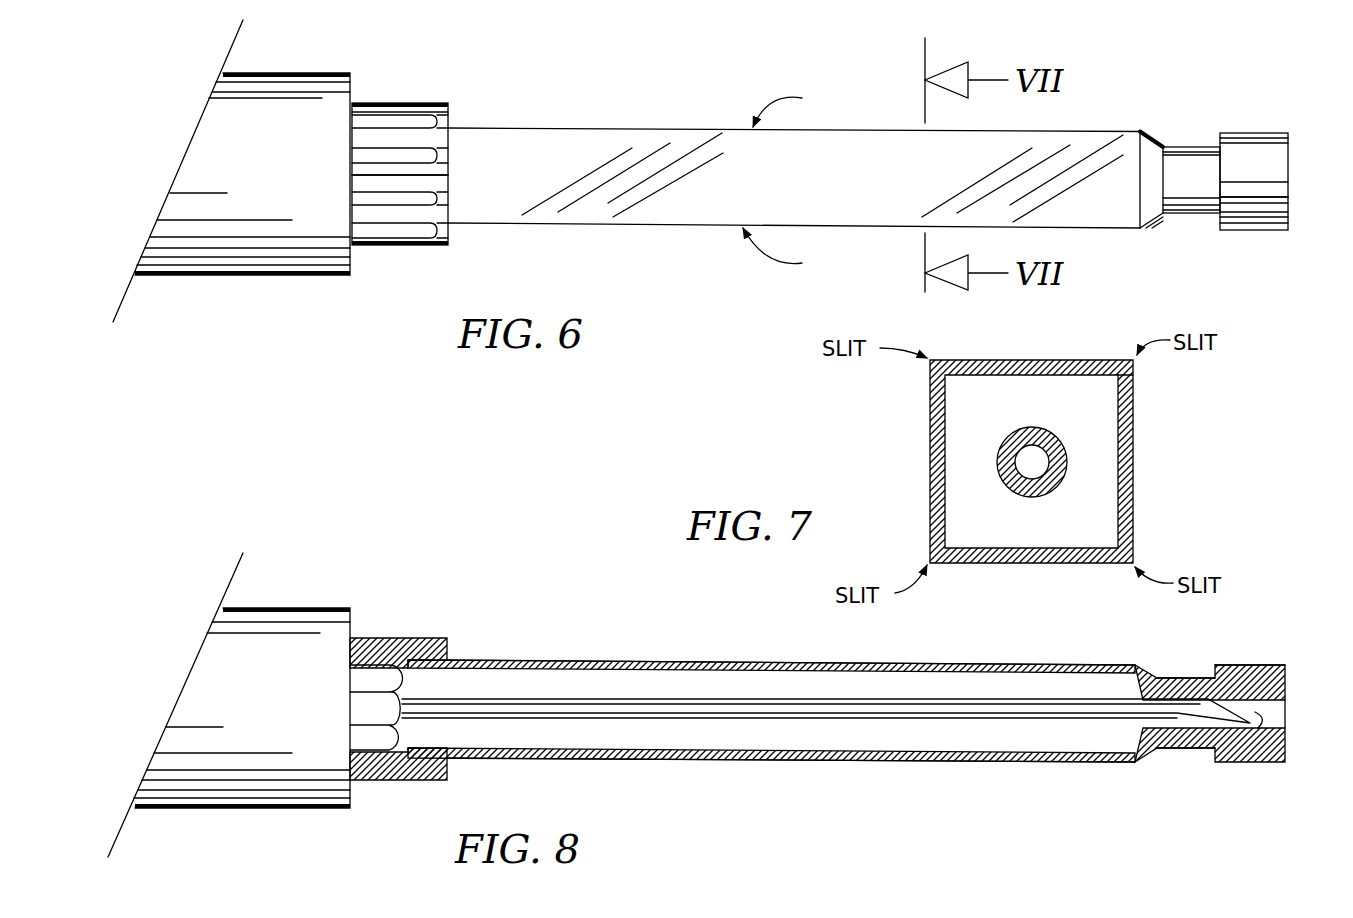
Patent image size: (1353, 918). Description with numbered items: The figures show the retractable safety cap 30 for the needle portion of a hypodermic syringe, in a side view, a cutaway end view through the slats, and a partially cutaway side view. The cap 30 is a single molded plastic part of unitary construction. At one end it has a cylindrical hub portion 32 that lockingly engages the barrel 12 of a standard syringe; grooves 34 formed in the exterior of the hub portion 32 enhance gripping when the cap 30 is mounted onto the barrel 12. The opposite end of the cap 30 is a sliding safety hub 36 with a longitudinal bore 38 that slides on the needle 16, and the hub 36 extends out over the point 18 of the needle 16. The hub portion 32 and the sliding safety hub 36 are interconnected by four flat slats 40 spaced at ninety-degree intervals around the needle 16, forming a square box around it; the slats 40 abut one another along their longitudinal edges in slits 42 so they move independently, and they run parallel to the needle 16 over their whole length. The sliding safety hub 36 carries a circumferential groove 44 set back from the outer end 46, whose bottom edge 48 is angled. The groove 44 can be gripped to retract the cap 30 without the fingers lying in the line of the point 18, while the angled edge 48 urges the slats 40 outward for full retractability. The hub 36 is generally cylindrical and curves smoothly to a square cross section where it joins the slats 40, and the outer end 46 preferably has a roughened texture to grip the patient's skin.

In FIG. 6, the barrel 12 is at (278, 123).
In FIG. 8, the barrel 12 is at (277, 657).
In FIG. 7, the needle 16 is at (997, 472).
In FIG. 8, the needle 16 is at (1078, 712).
In FIG. 8, the point 18 is at (1263, 667).
In FIG. 6, the retractable safety cap 30 is at (794, 157).
In FIG. 8, the retractable safety cap 30 is at (771, 691).
In FIG. 6, the cylindrical hub portion 32 is at (383, 182).
In FIG. 8, the cylindrical hub portion 32 is at (417, 780).
In FIG. 6, the grooves 34 is at (383, 123).
In FIG. 6, the sliding safety hub 36 is at (1243, 205).
In FIG. 8, the sliding safety hub 36 is at (1230, 763).
In FIG. 8, the longitudinal bore 38 is at (1263, 715).
In FIG. 6, the flat slats 40 is at (688, 202).
In FIG. 7, the flat slats 40 is at (1028, 360).
In FIG. 8, the flat slats 40 is at (680, 758).
In FIG. 6, the slits 42 is at (523, 127).
In FIG. 7, the slits 42 is at (1137, 368).
In FIG. 8, the slits 42 is at (517, 660).
In FIG. 6, the circumferential groove 44 is at (1188, 220).
In FIG. 8, the circumferential groove 44 is at (1183, 752).
In FIG. 6, the outer end 46 is at (1290, 165).
In FIG. 8, the outer end 46 is at (1238, 719).
In FIG. 6, the bottom edge 48 is at (1157, 147).
In FIG. 8, the bottom edge 48 is at (1155, 678).